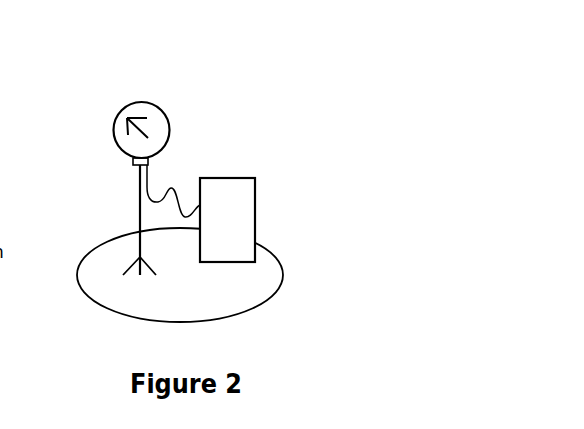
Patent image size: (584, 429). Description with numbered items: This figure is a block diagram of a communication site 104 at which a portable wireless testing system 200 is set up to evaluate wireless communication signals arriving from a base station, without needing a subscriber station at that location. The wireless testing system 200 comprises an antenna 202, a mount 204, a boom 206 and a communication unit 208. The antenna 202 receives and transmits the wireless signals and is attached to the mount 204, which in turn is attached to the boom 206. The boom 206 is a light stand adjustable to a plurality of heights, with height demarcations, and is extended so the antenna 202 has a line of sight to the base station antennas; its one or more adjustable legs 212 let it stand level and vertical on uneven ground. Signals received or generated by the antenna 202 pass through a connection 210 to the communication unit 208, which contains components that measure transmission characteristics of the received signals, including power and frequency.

The communication site 104 is at (182, 290).
The wireless testing system 200 is at (223, 170).
The antenna 202 is at (115, 122).
The mount 204 is at (133, 163).
The boom 206 is at (139, 203).
The communication unit 208 is at (245, 207).
The connection 210 is at (168, 189).
The adjustable legs 212 is at (150, 267).